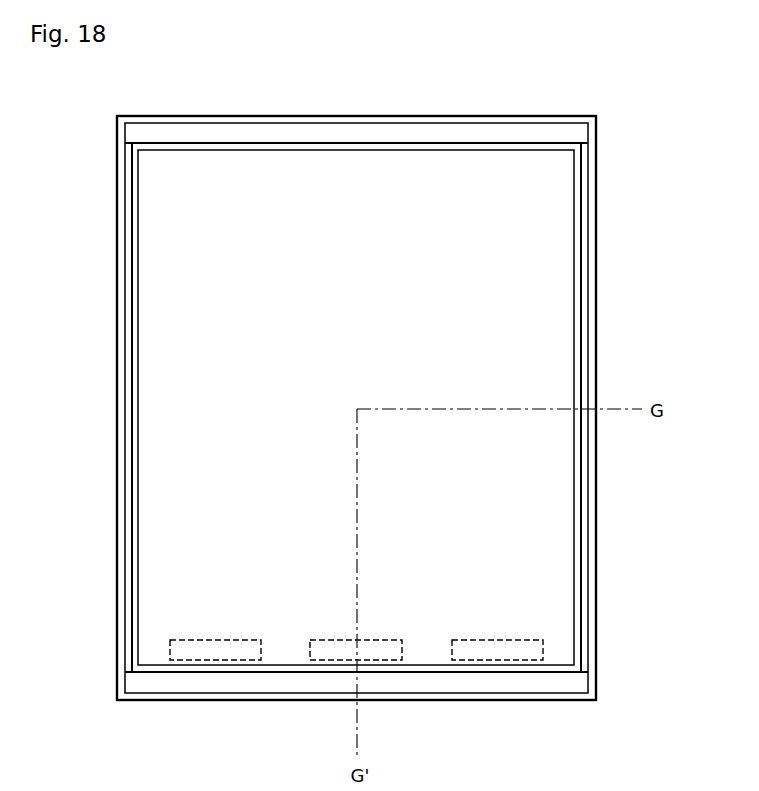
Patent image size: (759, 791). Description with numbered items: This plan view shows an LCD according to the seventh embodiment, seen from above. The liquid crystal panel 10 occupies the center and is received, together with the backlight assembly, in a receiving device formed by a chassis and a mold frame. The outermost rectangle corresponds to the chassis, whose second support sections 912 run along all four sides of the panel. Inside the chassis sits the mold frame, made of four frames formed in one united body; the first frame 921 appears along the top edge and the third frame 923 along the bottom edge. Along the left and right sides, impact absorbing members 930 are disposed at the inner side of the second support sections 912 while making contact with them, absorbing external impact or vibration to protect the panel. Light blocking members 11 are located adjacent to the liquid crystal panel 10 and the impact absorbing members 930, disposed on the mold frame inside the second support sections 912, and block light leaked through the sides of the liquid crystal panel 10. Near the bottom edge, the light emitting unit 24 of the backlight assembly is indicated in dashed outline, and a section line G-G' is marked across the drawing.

The liquid crystal panel 10 is at (262, 180).
The light blocking members 11 is at (184, 147).
The light emitting unit 24 is at (216, 660).
The second support sections 912 is at (388, 117).
The first frame 921 is at (453, 132).
The third frame 923 is at (538, 686).
The impact absorbing members 930 is at (130, 255).